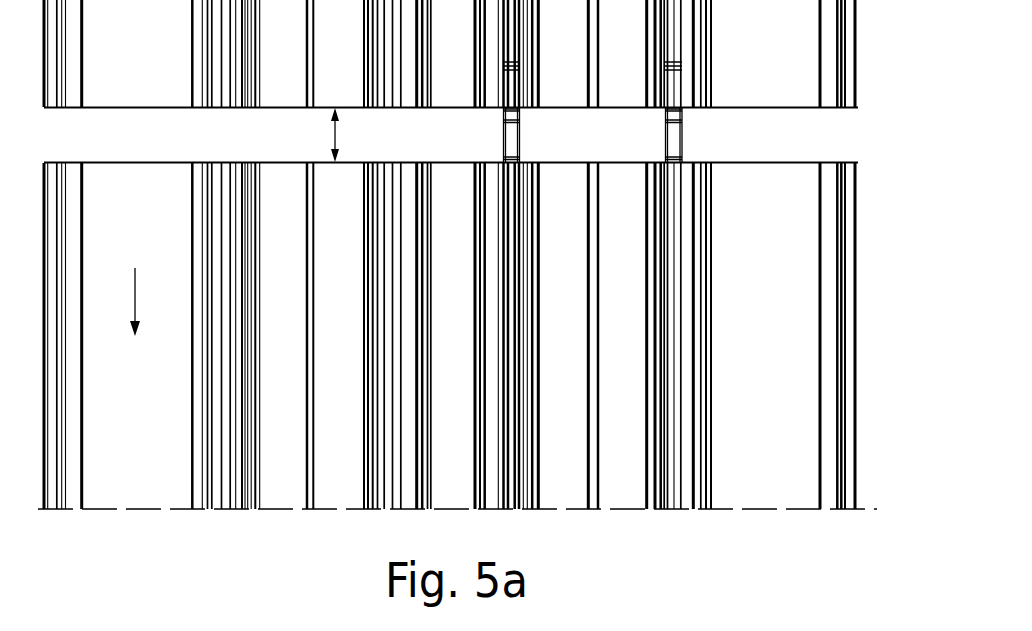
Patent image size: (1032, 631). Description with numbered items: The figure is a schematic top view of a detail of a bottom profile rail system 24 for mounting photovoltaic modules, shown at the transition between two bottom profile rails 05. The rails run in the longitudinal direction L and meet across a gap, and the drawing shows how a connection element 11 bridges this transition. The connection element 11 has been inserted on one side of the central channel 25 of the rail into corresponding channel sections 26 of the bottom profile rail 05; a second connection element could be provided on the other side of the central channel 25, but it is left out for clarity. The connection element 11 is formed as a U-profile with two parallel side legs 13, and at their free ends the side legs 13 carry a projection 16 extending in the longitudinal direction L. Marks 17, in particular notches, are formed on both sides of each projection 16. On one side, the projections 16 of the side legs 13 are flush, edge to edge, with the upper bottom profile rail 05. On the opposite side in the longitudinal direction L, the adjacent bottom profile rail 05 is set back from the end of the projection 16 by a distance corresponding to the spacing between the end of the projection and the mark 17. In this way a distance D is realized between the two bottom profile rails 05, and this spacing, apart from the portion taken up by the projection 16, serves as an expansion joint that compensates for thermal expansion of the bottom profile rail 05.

The bottom profile rail 05 is at (132, 88).
The connection element 11 is at (668, 125).
The side legs 13 is at (513, 138).
The projection 16 is at (510, 112).
The mark 17 is at (512, 165).
The bottom profile rail system 24 is at (837, 134).
The central channel 25 is at (443, 177).
The channel sections 26 is at (528, 63).
The distance D is at (348, 135).
The longitudinal direction L is at (145, 302).